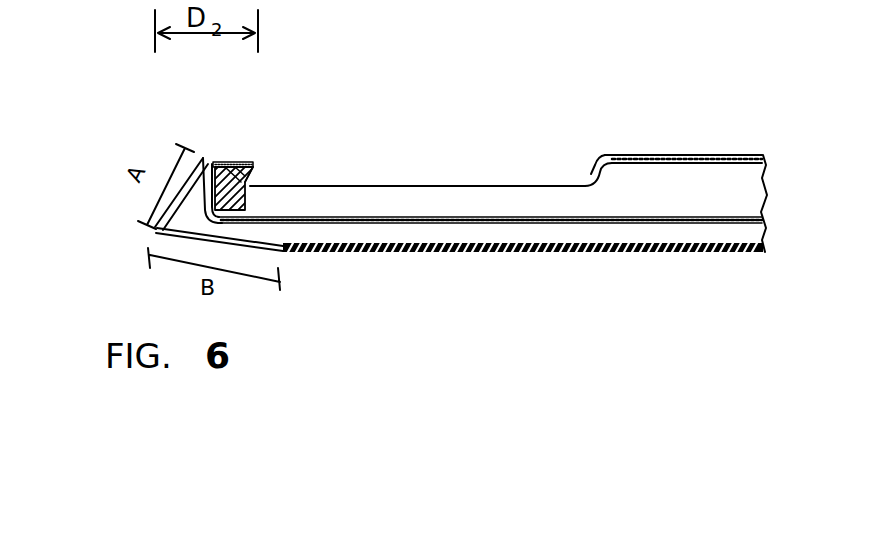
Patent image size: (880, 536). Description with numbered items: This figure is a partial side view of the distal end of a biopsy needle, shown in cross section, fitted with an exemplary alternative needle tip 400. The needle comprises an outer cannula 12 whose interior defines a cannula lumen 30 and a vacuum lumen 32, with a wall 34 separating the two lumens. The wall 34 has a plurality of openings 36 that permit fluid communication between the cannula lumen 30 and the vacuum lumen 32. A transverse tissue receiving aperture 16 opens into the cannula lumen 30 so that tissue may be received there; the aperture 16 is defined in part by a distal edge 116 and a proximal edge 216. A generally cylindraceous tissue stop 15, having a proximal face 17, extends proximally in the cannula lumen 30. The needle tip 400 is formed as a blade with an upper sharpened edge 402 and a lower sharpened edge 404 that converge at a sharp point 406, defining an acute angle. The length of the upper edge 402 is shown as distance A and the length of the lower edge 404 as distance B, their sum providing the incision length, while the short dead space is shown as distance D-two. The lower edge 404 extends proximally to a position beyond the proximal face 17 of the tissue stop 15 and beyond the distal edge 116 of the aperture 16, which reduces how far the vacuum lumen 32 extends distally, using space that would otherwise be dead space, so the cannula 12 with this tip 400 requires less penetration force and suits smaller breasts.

The outer cannula 12 is at (693, 155).
The tissue stop 15 is at (223, 162).
The transverse tissue receiving aperture 16 is at (400, 143).
The proximal face 17 is at (250, 192).
The cannula lumen 30 is at (657, 192).
The vacuum lumen 32 is at (701, 235).
The wall 34 is at (498, 217).
The openings 36 is at (402, 218).
The distal edge 116 is at (258, 163).
The proximal edge 216 is at (600, 162).
The needle tip 400 is at (190, 215).
The upper sharpened edge 402 is at (158, 222).
The lower sharpened edge 404 is at (236, 233).
The sharp point 406 is at (162, 230).